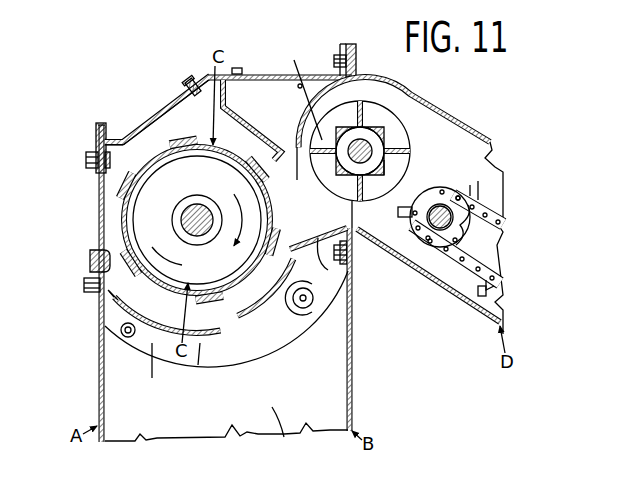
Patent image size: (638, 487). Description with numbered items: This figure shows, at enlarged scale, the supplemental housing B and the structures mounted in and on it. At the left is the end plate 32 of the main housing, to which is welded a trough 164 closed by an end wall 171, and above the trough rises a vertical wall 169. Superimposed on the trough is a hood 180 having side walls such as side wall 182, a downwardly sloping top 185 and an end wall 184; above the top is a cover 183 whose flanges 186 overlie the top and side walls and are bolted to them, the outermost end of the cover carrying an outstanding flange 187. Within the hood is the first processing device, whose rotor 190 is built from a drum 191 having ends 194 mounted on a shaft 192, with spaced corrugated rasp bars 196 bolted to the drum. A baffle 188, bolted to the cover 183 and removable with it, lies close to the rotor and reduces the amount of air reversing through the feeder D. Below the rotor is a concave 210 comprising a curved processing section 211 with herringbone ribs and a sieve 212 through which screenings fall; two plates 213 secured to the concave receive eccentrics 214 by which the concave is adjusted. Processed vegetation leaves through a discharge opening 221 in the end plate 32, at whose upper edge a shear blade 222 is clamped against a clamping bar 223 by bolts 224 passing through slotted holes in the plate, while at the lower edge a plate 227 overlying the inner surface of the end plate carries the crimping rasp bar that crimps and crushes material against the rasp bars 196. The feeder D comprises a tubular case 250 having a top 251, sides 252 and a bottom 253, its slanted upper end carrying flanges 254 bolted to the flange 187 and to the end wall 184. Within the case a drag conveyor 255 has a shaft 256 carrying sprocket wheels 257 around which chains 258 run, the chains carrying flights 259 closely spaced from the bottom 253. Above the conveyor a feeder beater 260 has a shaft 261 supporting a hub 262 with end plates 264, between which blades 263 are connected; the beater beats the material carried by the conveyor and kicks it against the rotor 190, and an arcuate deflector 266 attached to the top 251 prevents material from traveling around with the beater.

The end plate 32 is at (100, 127).
The trough 164 is at (353, 410).
The vertical wall 169 is at (286, 436).
The end wall 171 is at (353, 367).
The hood 180 is at (123, 139).
The side wall 182 is at (140, 150).
The cover 183 is at (258, 73).
The end wall 184 is at (316, 239).
The top 185 is at (130, 128).
The flanges 186 is at (205, 78).
The outstanding flange 187 is at (340, 58).
The baffle 188 is at (267, 145).
The rotor 190 is at (122, 220).
The drum 191 is at (234, 165).
The shaft 192 is at (185, 218).
The ends 194 is at (165, 258).
The corrugated rasp bars 196 is at (180, 135).
The concave 210 is at (199, 362).
The processing section 211 is at (262, 317).
The sieve 212 is at (152, 378).
The plates 213 is at (120, 337).
The eccentrics 214 is at (128, 338).
The discharge opening 221 is at (99, 224).
The shear blade 222 is at (99, 178).
The clamping bar 223 is at (99, 152).
The bolts 224 is at (86, 161).
The plate 227 is at (97, 297).
The tubular case 250 is at (438, 102).
The top 251 is at (380, 80).
The sides 252 is at (418, 149).
The bottom 253 is at (483, 318).
The flanges 254 is at (352, 44).
The drag conveyor 255 is at (412, 227).
The shaft 256 is at (440, 230).
The sprocket wheels 257 is at (458, 215).
The chains 258 is at (465, 270).
The flights 259 is at (472, 315).
The feeder beater 260 is at (392, 147).
The shaft 261 is at (366, 138).
The hub 262 is at (345, 165).
The blades 263 is at (299, 65).
The end plates 264 is at (390, 173).
The arcuate deflector 266 is at (297, 178).